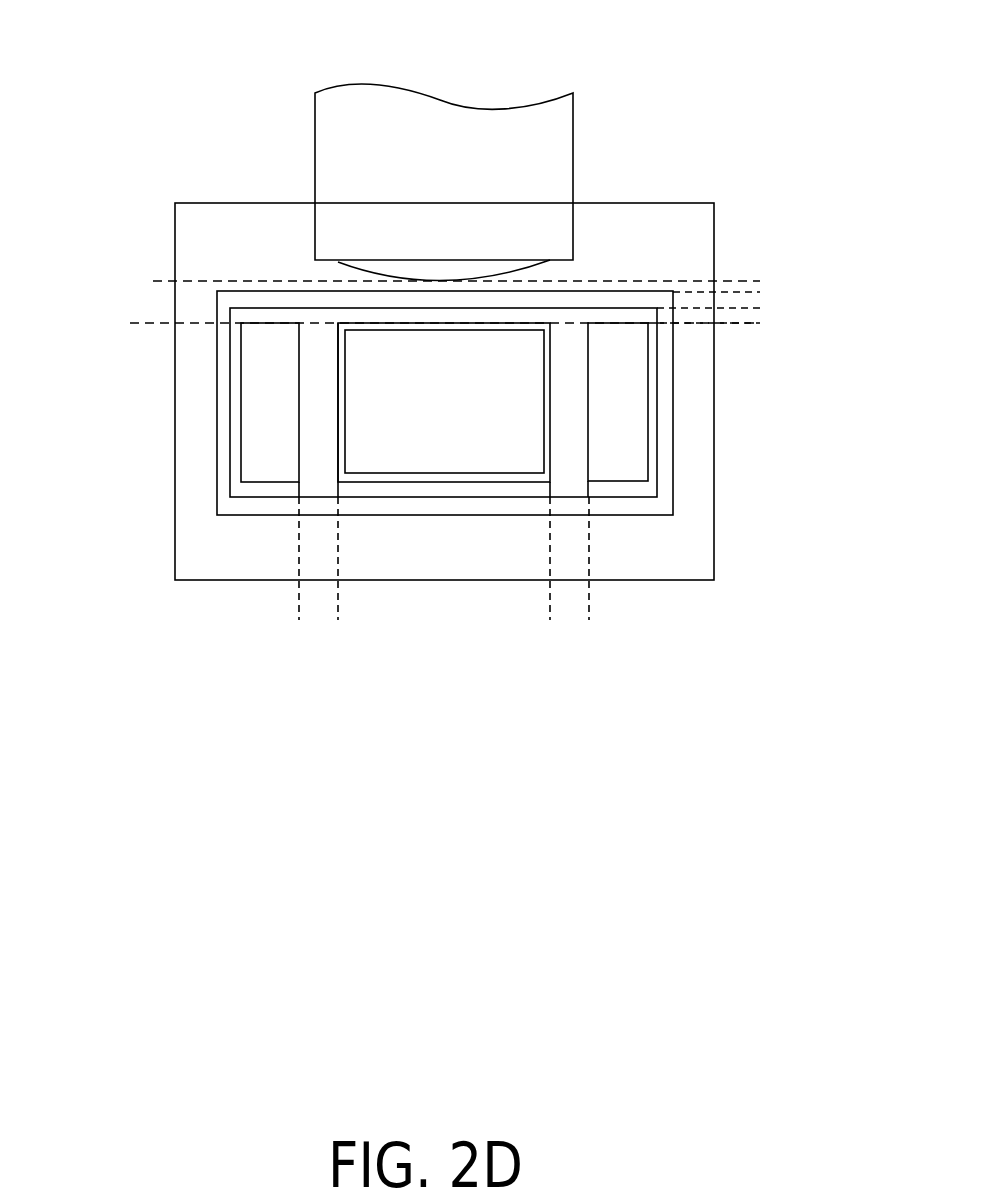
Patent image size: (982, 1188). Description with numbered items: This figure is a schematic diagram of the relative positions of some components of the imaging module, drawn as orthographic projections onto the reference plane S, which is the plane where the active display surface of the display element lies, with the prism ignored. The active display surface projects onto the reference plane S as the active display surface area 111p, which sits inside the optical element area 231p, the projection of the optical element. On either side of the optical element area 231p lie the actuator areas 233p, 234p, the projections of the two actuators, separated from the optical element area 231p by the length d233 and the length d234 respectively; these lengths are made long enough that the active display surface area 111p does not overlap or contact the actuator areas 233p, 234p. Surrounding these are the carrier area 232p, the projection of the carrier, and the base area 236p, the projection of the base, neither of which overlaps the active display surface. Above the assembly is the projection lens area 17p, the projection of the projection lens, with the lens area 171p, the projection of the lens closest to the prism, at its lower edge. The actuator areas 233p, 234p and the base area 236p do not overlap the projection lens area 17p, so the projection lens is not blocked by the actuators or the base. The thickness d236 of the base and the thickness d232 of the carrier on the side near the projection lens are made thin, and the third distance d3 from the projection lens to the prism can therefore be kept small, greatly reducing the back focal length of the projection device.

The reference plane S is at (642, 204).
The projection lens area 17p is at (332, 112).
The lens area 171p is at (365, 268).
The third distance d3 is at (141, 315).
The base area 236p is at (673, 373).
The carrier area 232p is at (657, 415).
The actuator area 234p is at (240, 430).
The optical element area 231p is at (388, 482).
The active display surface area 111p is at (475, 473).
The actuator area 233p is at (648, 448).
The length d234 is at (331, 617).
The length d233 is at (582, 617).
The thickness of the base d236 is at (764, 292).
The thickness of the carrier d232 is at (764, 308).